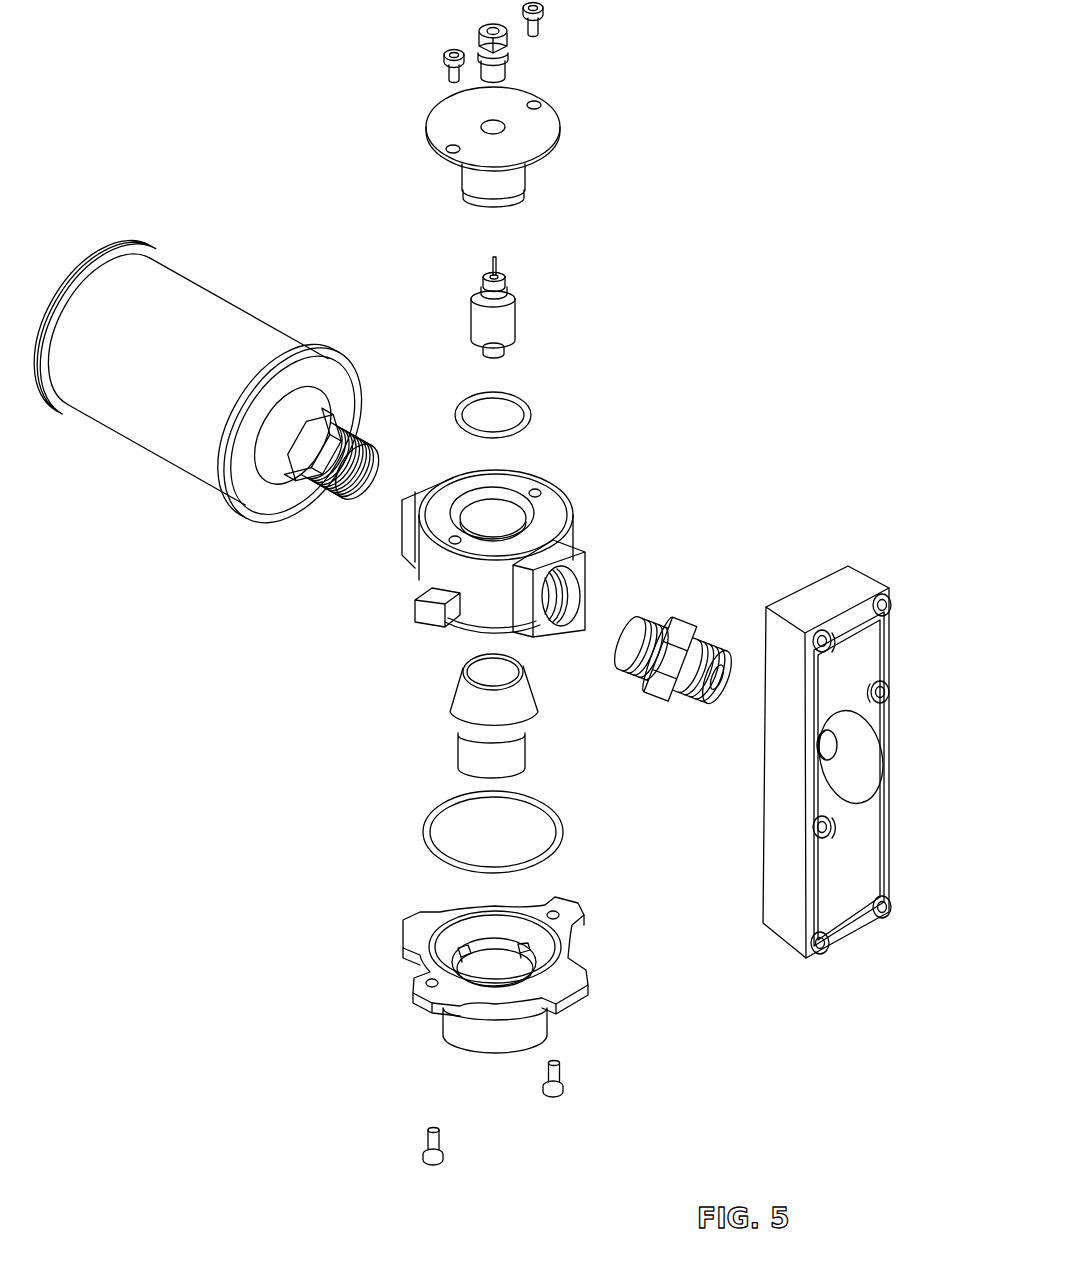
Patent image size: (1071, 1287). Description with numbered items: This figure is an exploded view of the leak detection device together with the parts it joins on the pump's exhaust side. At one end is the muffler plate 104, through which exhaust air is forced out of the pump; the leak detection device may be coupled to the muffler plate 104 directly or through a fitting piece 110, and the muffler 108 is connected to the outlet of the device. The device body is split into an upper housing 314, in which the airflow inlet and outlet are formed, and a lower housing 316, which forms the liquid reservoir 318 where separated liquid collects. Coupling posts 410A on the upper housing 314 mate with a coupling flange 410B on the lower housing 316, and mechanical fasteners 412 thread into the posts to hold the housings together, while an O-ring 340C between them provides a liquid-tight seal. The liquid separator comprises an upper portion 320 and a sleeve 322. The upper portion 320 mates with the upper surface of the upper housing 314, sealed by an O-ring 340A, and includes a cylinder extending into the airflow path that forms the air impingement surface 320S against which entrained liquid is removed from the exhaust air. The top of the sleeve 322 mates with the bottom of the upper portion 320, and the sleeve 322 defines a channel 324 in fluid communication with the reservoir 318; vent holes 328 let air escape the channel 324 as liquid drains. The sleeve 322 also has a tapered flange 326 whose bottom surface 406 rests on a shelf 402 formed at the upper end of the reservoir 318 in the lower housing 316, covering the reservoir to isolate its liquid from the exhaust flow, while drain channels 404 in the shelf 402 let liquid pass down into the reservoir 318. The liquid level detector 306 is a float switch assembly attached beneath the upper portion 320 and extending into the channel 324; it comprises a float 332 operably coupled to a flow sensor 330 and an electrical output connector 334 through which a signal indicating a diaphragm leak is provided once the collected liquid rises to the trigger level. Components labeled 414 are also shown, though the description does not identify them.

The muffler plate 104 is at (858, 847).
The muffler 108 is at (236, 342).
The fitting piece 110 is at (686, 622).
The liquid level detector 306 is at (438, 315).
The upper housing 314 is at (556, 492).
The lower housing 316 is at (445, 1034).
The liquid reservoir 318 is at (496, 953).
The upper portion of liquid separator 320 is at (550, 126).
The air impingement surface 320S is at (537, 178).
The sleeve 322 is at (537, 682).
The channel 324 is at (481, 666).
The tapered flange 326 is at (538, 727).
The vent holes 328 is at (458, 702).
The flow sensor 330 is at (498, 288).
The float 332 is at (503, 322).
The electrical output connector 334 is at (493, 25).
The O-ring 340A is at (510, 398).
The O-ring 340C is at (432, 816).
The shelf 402 is at (418, 916).
The drain channels 404 is at (437, 953).
The bottom surface of tapered flange 406 is at (444, 749).
The coupling posts 410A is at (415, 604).
The coupling flange 410B is at (415, 991).
The mechanical fasteners 412 is at (543, 1073).
The upper screws 414 is at (543, 24).